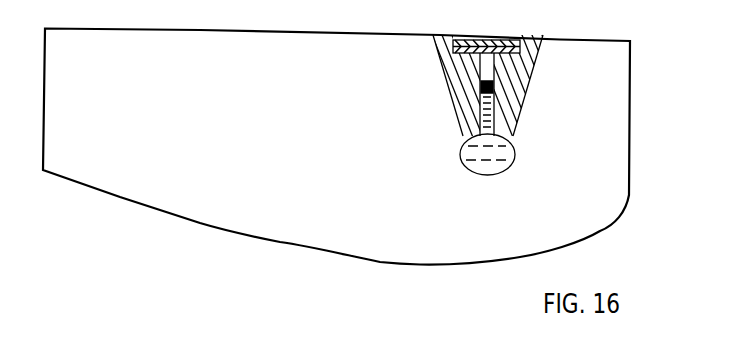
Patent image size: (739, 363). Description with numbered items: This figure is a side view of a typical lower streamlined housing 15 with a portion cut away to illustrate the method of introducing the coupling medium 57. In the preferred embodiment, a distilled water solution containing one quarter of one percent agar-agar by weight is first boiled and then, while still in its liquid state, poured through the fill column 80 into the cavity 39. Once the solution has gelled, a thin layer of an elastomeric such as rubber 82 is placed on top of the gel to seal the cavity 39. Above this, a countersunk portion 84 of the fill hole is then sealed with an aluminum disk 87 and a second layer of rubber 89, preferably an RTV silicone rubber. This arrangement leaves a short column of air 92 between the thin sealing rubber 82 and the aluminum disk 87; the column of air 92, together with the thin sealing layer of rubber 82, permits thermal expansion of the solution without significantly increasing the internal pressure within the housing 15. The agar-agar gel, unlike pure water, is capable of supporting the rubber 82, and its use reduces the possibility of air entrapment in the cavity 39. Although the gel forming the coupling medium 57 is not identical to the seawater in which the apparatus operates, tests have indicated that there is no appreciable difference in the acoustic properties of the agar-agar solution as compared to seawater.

The housing 15 is at (631, 92).
The countersunk portion 84 is at (453, 59).
The fill column 80 is at (496, 67).
The aluminum disk 87 is at (463, 39).
The second layer of rubber 89 is at (489, 39).
The column of air 92 is at (486, 70).
The rubber 82 is at (480, 91).
The cavity 39 is at (462, 163).
The coupling medium 57 is at (506, 148).